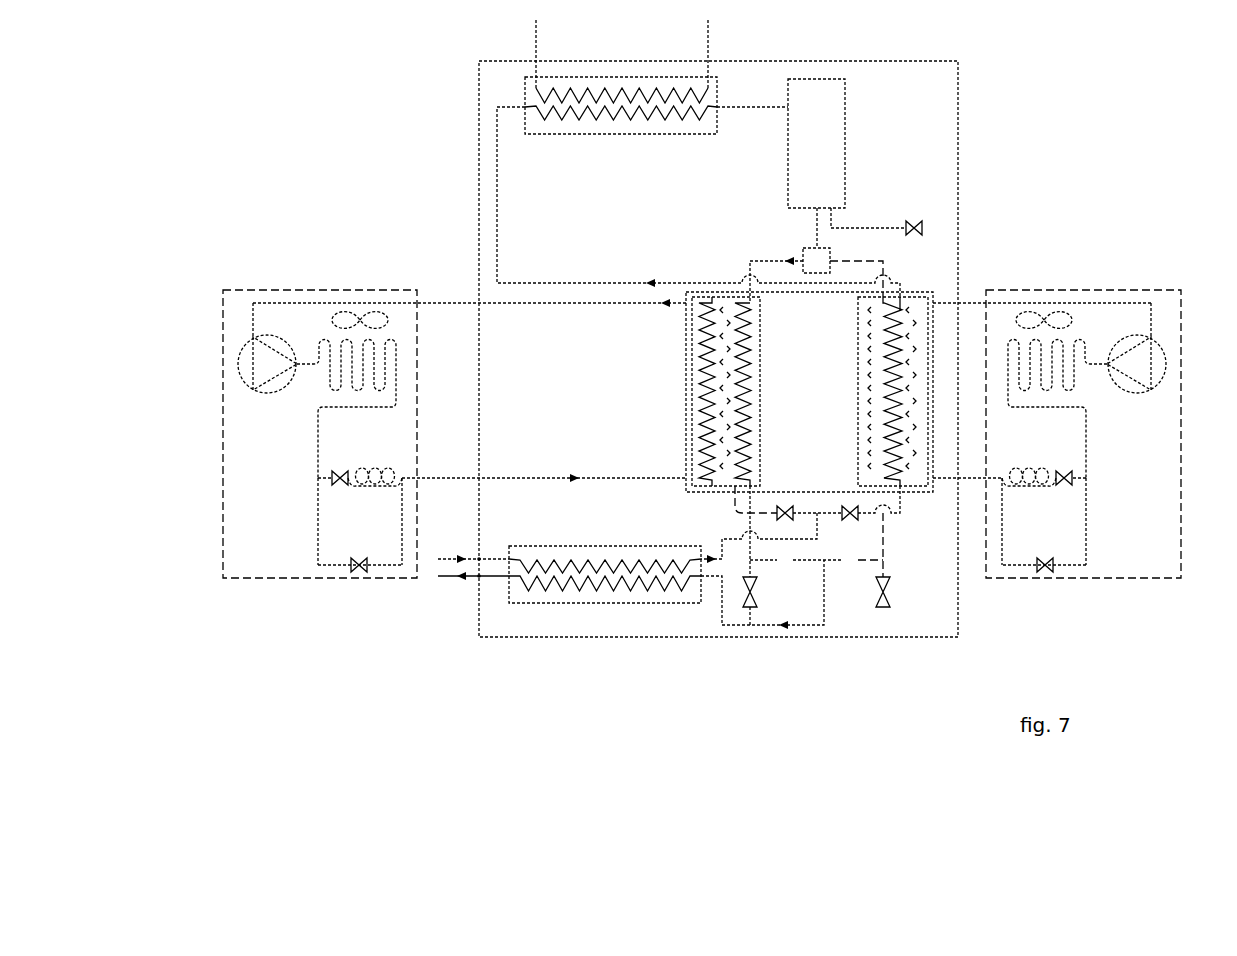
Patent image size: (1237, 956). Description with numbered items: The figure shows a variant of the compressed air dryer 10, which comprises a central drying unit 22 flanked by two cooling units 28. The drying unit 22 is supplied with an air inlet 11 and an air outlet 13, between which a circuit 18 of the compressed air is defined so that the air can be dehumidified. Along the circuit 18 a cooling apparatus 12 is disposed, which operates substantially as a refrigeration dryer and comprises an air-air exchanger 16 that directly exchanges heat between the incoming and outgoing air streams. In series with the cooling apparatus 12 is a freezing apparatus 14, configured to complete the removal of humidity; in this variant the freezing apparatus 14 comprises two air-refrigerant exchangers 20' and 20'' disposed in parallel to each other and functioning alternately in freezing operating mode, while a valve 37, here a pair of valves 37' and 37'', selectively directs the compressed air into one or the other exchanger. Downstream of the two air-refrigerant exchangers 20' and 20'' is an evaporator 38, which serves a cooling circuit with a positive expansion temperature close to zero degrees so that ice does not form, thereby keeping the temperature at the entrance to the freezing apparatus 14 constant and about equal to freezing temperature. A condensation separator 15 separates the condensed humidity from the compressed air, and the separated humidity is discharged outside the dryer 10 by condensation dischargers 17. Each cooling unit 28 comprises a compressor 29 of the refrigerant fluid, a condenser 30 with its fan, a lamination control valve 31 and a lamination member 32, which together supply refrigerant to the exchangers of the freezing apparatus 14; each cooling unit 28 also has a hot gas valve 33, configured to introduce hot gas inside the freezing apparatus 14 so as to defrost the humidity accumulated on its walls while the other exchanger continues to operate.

The dryer 10 is at (1064, 89).
The air inlet 11 is at (478, 558).
The cooling apparatus 12 is at (531, 616).
The air outlet 13 is at (478, 577).
The freezing apparatus 14 is at (916, 286).
The condensation separator 15 is at (846, 170).
The air-air exchanger 16 is at (592, 605).
The condensation discharger 17 is at (918, 226).
The circuit 18 is at (498, 197).
The air-refrigerant exchanger 20' is at (695, 391).
The air-refrigerant exchanger 20'' is at (862, 391).
The drying unit 22 is at (769, 56).
The cooling unit 28 is at (218, 461).
The compressor 29 is at (239, 356).
The condenser 30 is at (320, 342).
The lamination control valve 31 is at (340, 471).
The lamination member 32 is at (375, 469).
The hot gas valve 33 is at (358, 568).
The valve 37 is at (828, 458).
The valve 37' is at (792, 492).
The valve 37'' is at (890, 525).
The evaporator 38 is at (625, 76).